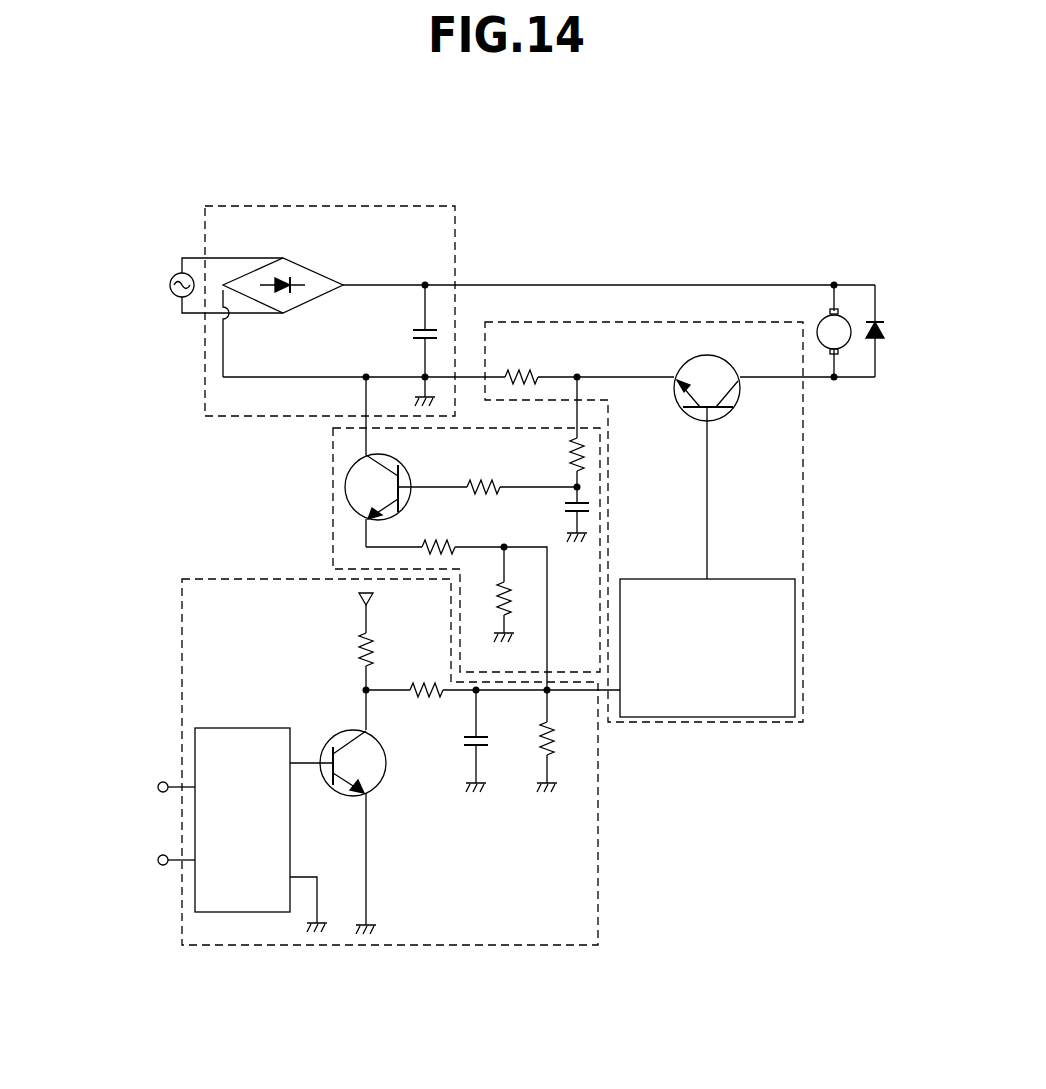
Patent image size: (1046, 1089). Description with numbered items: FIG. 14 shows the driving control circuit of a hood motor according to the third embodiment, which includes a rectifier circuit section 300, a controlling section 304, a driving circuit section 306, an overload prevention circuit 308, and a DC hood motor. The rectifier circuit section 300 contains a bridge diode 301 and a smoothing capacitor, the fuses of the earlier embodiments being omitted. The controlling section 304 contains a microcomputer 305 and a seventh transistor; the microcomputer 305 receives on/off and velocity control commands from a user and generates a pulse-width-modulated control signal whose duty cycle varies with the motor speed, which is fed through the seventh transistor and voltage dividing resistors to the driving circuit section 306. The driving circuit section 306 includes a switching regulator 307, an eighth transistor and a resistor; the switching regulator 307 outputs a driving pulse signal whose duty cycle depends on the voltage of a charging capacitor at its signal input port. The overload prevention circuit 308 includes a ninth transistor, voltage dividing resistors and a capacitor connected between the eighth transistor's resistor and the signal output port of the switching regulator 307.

The rectifier circuit section 300 is at (411, 205).
The bridge diode 301 is at (317, 277).
The controlling section 304 is at (600, 912).
The microcomputer 305 is at (262, 728).
The driving circuit section 306 is at (805, 490).
The switching regulator 307 is at (796, 632).
The overload prevention circuit 308 is at (333, 492).